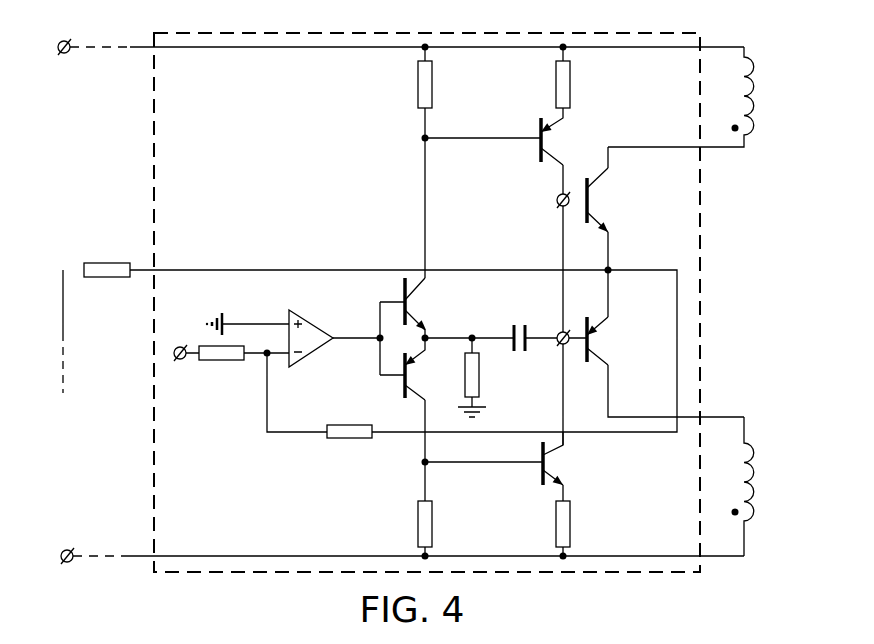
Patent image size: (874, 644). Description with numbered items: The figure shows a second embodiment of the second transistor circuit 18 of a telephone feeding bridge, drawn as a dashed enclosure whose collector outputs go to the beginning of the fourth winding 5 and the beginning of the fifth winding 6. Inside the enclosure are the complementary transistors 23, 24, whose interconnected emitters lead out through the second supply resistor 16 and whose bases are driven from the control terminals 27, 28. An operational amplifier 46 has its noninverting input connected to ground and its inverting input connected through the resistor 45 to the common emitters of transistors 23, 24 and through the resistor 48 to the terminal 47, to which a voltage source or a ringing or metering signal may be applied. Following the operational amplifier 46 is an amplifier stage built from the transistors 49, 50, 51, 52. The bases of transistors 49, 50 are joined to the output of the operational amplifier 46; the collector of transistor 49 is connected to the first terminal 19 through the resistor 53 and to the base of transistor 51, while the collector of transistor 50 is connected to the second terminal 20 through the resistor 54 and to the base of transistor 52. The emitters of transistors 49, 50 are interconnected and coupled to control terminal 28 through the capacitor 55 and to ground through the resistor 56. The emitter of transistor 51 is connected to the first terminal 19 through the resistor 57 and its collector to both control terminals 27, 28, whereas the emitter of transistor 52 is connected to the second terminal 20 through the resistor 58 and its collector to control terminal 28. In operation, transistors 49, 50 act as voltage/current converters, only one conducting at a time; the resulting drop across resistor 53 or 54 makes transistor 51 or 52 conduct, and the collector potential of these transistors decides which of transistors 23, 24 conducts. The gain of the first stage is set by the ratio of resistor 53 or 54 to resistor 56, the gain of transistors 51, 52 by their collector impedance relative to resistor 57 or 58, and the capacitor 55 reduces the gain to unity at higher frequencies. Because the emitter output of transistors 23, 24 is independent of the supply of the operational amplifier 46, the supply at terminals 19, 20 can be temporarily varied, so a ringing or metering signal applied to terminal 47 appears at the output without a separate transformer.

The fourth winding 5 is at (744, 98).
The fifth winding 6 is at (746, 492).
The second supply resistor 16 is at (107, 263).
The second transistor circuit 18 is at (670, 574).
The first terminal 19 is at (69, 53).
The second terminal 20 is at (71, 549).
The transistor 23 is at (586, 180).
The transistor 24 is at (586, 318).
The control terminal 27 is at (556, 200).
The control terminal 28 is at (558, 345).
The resistor 45 is at (346, 425).
The operational amplifier 46 is at (310, 322).
The terminal 47 is at (182, 360).
The resistor 48 is at (222, 360).
The transistor 49 is at (412, 306).
The transistor 50 is at (412, 372).
The transistor 51 is at (538, 156).
The transistor 52 is at (548, 462).
The resistor 53 is at (432, 92).
The resistor 54 is at (418, 519).
The capacitor 55 is at (515, 322).
The resistor 56 is at (479, 381).
The resistor 57 is at (570, 92).
The resistor 58 is at (556, 528).